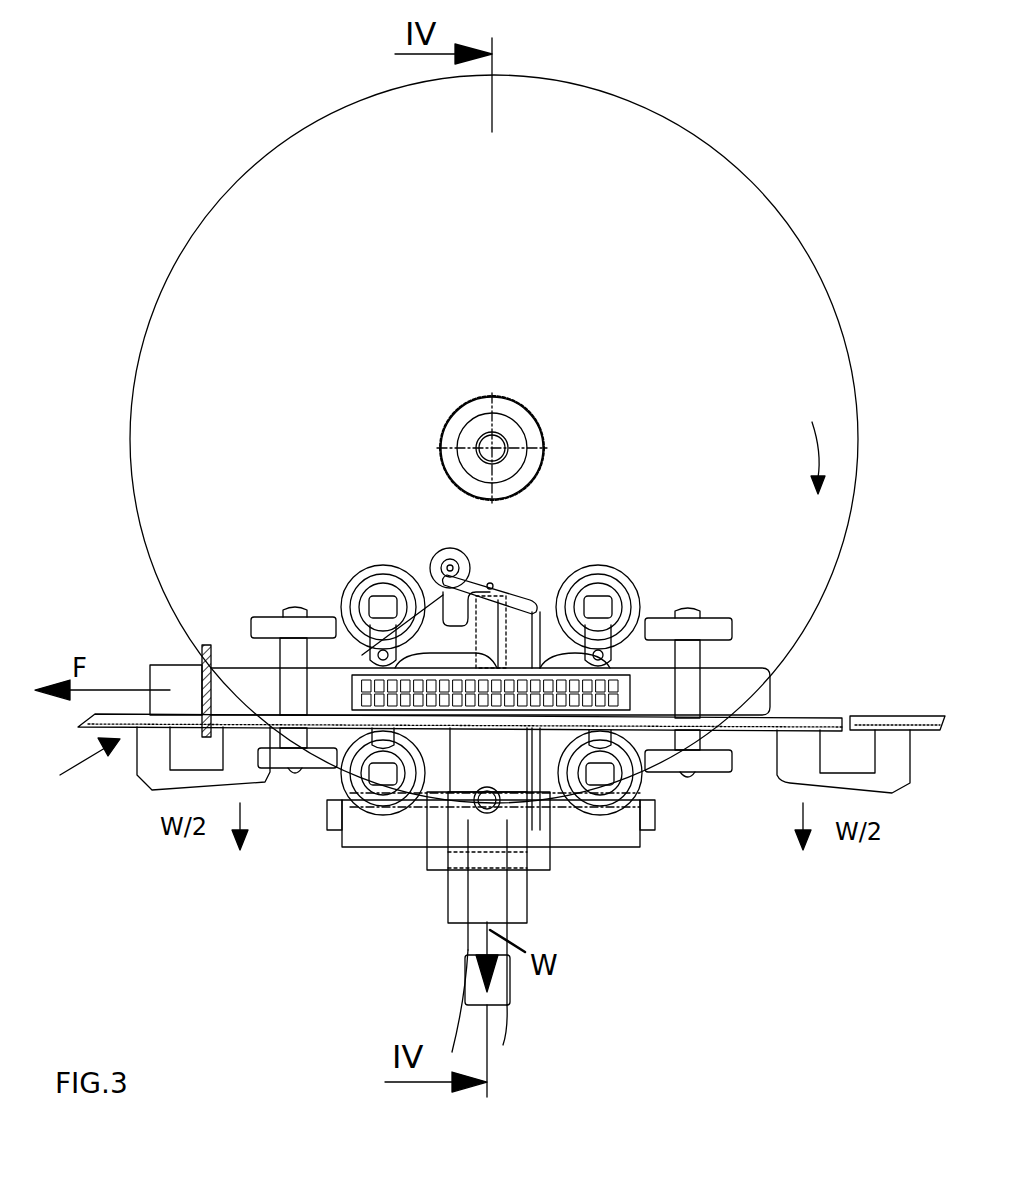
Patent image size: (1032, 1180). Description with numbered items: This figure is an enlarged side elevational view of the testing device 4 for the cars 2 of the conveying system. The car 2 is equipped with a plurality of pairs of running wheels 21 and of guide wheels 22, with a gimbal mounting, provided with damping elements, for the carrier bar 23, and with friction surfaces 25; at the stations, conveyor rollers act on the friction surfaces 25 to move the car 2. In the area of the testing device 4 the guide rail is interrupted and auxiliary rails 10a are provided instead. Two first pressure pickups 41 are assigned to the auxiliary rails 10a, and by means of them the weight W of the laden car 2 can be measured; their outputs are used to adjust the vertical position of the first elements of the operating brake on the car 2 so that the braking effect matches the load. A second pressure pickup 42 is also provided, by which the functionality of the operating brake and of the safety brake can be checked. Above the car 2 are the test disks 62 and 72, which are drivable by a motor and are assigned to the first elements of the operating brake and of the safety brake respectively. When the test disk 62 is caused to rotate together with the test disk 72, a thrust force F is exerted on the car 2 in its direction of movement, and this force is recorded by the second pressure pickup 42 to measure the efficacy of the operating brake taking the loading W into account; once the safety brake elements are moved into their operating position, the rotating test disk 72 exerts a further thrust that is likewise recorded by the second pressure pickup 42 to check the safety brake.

The car 2 is at (438, 877).
The testing device 4 is at (77, 766).
The auxiliary rails 10a is at (805, 725).
The running wheels 21 is at (363, 590).
The guide wheels 22 is at (275, 628).
The carrier bar 23 is at (480, 940).
The friction surfaces 25 is at (490, 675).
The first pressure pickups 41 is at (232, 752).
The second pressure pickup 42 is at (182, 683).
The test disk 62 is at (478, 270).
The test disk 72 is at (522, 270).